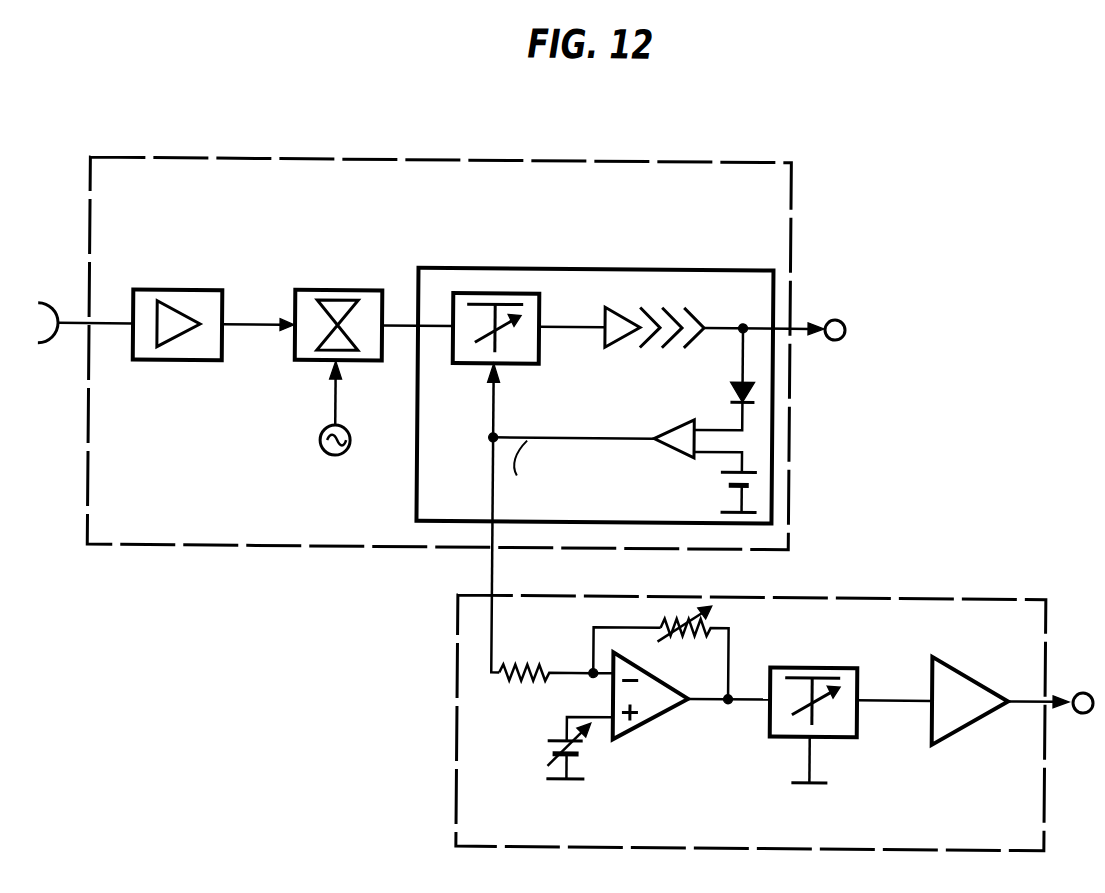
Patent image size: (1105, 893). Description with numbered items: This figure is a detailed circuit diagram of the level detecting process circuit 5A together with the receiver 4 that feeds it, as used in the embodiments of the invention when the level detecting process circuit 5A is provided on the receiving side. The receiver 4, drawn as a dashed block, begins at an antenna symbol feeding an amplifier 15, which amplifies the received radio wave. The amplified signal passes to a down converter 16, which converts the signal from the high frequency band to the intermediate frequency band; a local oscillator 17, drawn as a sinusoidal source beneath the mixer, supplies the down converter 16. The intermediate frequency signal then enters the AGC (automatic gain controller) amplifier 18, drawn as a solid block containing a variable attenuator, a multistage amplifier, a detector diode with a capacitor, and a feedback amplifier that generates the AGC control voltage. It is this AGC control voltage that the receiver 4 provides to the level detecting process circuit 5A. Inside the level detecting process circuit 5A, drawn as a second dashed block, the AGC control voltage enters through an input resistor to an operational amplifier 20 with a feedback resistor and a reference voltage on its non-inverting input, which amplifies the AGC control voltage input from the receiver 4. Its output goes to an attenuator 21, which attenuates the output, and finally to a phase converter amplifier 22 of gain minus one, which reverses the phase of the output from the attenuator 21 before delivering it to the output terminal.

The receiver 4 is at (402, 162).
The amplifier 15 is at (145, 292).
The down converter 16 is at (302, 291).
The local oscillator 17 is at (351, 433).
The AGC amplifier 18 is at (474, 268).
The level detecting process circuit 5A is at (525, 593).
The operational amplifier 20 is at (636, 731).
The attenuator 21 is at (841, 665).
The phase converter amplifier 22 is at (963, 669).